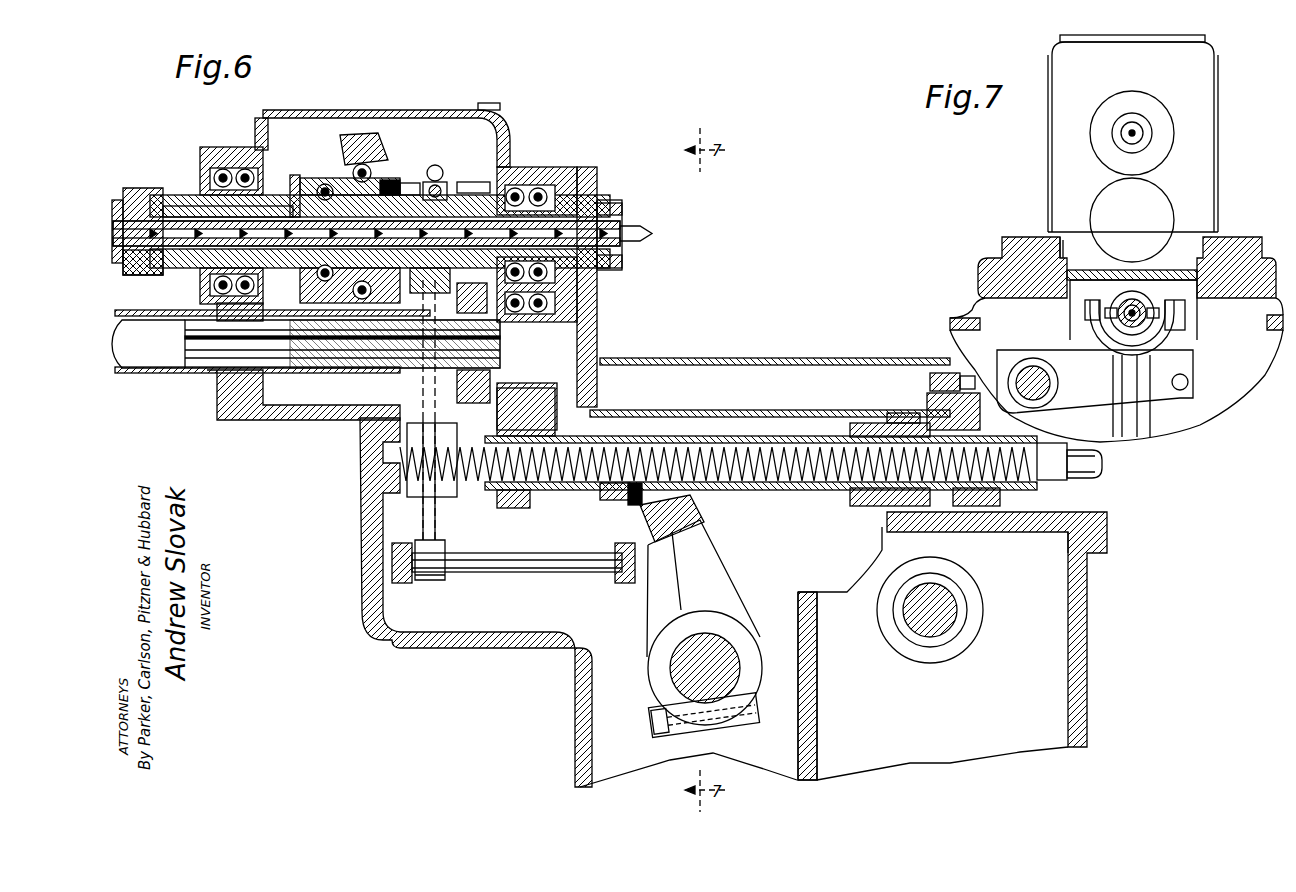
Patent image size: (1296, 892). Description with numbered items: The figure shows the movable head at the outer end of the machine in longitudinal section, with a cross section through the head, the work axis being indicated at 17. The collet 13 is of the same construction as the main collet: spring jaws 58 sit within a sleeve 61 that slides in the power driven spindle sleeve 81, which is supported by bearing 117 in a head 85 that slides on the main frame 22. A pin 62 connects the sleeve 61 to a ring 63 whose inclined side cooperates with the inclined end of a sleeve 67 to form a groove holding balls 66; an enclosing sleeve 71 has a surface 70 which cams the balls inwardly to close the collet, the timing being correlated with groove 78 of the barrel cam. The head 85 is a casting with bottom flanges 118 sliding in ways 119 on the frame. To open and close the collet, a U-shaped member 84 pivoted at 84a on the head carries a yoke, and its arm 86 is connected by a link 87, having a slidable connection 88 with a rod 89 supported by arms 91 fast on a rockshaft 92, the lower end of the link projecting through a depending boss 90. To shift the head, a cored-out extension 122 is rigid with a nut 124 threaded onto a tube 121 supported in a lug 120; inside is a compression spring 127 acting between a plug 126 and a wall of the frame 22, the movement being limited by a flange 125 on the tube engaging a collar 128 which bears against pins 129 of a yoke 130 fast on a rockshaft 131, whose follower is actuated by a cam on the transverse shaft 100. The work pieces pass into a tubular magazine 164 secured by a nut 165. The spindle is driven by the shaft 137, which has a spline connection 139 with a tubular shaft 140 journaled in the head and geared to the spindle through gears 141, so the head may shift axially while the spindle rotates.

In FIG. 6, the collet 13 is at (138, 182).
In FIG. 6, the spindle 17 is at (645, 240).
In FIG. 6, the main machine frame 22 is at (362, 568).
In FIG. 7, the main machine frame 22 is at (980, 292).
In FIG. 6, the spring jaws 58 is at (125, 265).
In FIG. 6, the sleeve 61 is at (228, 205).
In FIG. 6, the pin 62 is at (380, 206).
In FIG. 6, the ring 63 is at (288, 195).
In FIG. 6, the balls 66 is at (380, 258).
In FIG. 6, the sleeve 67 is at (416, 185).
In FIG. 6, the cam surface 70 is at (302, 280).
In FIG. 6, the sleeve 71 is at (395, 182).
In FIG. 6, the groove 78 is at (375, 172).
In FIG. 6, the power driven sleeve 81 is at (412, 278).
In FIG. 6, the U-shaped member 84 is at (342, 140).
In FIG. 6, the pivot 84a is at (352, 160).
In FIG. 6, the head 85 is at (510, 132).
In FIG. 7, the head 85 is at (1046, 108).
In FIG. 6, the arm 86 is at (415, 168).
In FIG. 6, the link 87 is at (437, 522).
In FIG. 6, the slidable connection 88 is at (545, 572).
In FIG. 7, the slidable connection 88 is at (1188, 380).
In FIG. 6, the rod 89 is at (446, 582).
In FIG. 6, the depending boss 90 is at (455, 492).
In FIG. 7, the depending boss 90 is at (1176, 336).
In FIG. 6, the arms 91 is at (402, 583).
In FIG. 7, the arms 91 is at (1090, 400).
In FIG. 7, the rockshaft 92 is at (1050, 383).
In FIG. 6, the transverse shaft 100 is at (945, 605).
In FIG. 6, the bearing 117 is at (245, 168).
In FIG. 7, the bottom flanges 118 is at (1062, 290).
In FIG. 7, the ways 119 is at (1085, 308).
In FIG. 6, the lug 120 is at (522, 500).
In FIG. 7, the lug 120 is at (1100, 315).
In FIG. 6, the tube 121 is at (1038, 490).
In FIG. 7, the tube 121 is at (1115, 320).
In FIG. 6, the cored-out extension 122 is at (935, 375).
In FIG. 7, the cored-out extension 122 is at (1062, 240).
In FIG. 6, the nut 124 is at (978, 506).
In FIG. 6, the flange 125 is at (610, 497).
In FIG. 6, the plug 126 is at (1095, 478).
In FIG. 6, the compression spring 127 is at (788, 488).
In FIG. 7, the compression spring 127 is at (1140, 297).
In FIG. 6, the collar 128 is at (633, 505).
In FIG. 6, the pins 129 is at (680, 432).
In FIG. 7, the pins 129 is at (1118, 322).
In FIG. 6, the yoke 130 is at (700, 525).
In FIG. 7, the yoke 130 is at (1160, 350).
In FIG. 6, the rockshaft 131 is at (690, 672).
In FIG. 6, the shaft 137 is at (152, 365).
In FIG. 6, the spline connection 139 is at (333, 352).
In FIG. 6, the tubular shaft 140 is at (365, 368).
In FIG. 6, the gears 141 is at (482, 184).
In FIG. 6, the tubular magazine 164 is at (612, 208).
In FIG. 7, the tubular magazine 164 is at (1150, 128).
In FIG. 6, the nut 165 is at (624, 206).
In FIG. 7, the nut 165 is at (1140, 128).